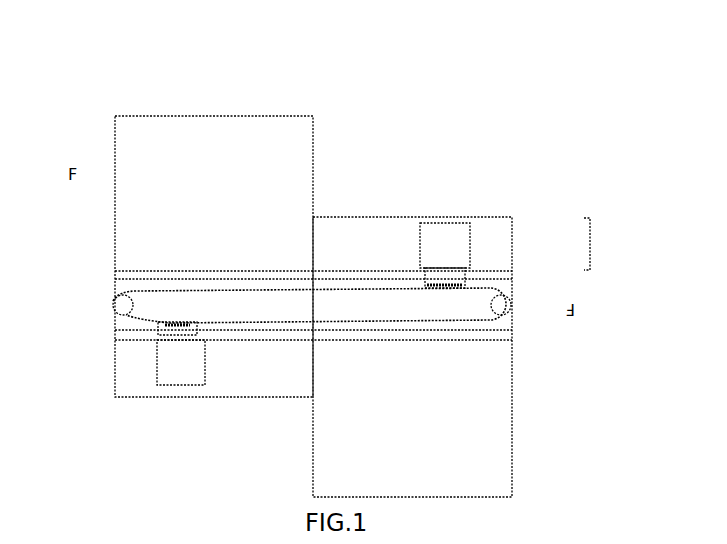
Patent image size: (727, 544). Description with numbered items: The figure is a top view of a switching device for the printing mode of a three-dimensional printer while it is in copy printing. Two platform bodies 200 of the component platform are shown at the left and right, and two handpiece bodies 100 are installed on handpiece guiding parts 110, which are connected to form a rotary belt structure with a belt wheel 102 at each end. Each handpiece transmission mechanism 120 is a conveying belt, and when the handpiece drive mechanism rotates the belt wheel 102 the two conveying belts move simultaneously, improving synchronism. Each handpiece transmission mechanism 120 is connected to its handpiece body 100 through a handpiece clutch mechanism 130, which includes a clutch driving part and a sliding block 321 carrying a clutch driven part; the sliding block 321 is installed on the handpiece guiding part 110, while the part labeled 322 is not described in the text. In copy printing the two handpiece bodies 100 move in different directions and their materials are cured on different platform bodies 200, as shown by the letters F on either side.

The platform body 200 is at (182, 147).
The handpiece transmission mechanism 120 is at (370, 318).
The handpiece guiding part 110 is at (257, 275).
The belt wheel 102 is at (113, 305).
The handpiece body 100 is at (183, 362).
The handpiece clutch mechanism 130 is at (160, 338).
The sliding block 321 is at (447, 275).
The sensing strip 322 is at (482, 280).